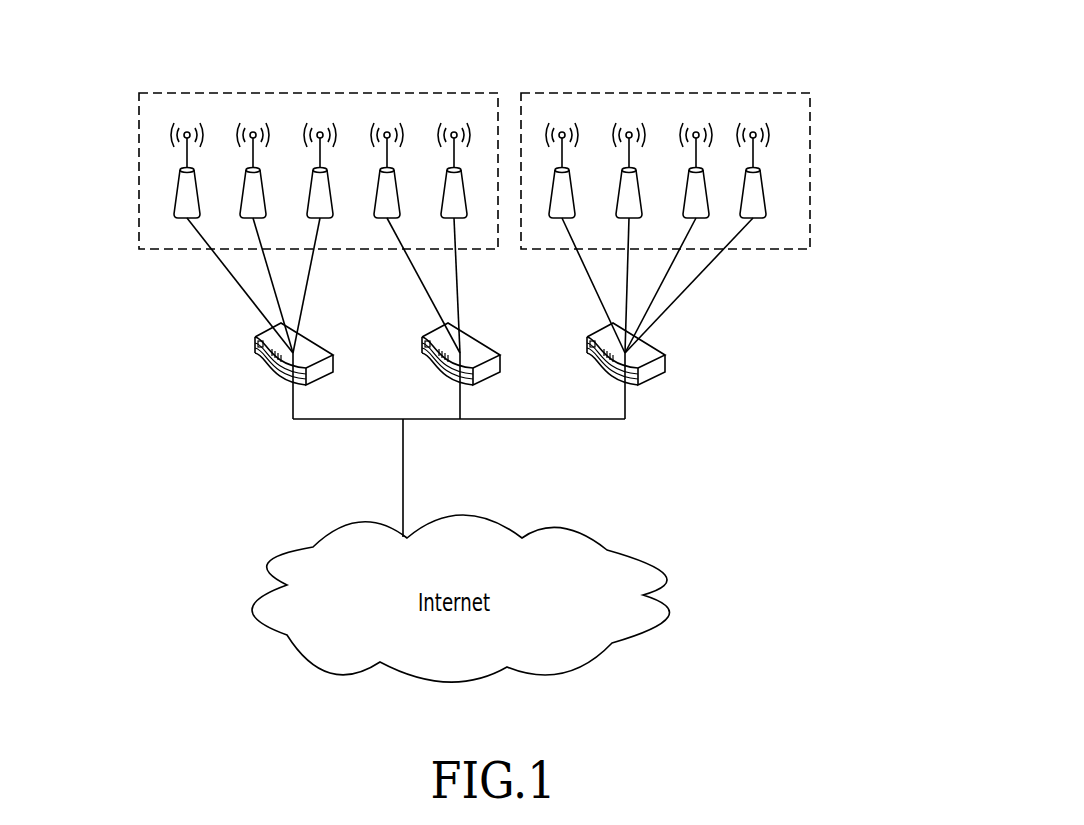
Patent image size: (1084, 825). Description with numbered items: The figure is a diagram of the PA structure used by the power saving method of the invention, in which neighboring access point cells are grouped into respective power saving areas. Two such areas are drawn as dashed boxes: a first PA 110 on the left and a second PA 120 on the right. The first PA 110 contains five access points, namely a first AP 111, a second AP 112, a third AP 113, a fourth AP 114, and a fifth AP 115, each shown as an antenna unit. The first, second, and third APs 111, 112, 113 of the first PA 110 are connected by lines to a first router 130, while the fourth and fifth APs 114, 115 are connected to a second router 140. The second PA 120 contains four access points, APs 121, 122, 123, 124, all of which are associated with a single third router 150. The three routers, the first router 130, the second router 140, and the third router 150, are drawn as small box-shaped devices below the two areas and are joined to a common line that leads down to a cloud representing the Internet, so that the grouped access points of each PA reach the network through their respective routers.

The first PA 110 is at (190, 252).
The first AP 111 is at (179, 186).
The second AP 112 is at (244, 188).
The third AP 113 is at (311, 188).
The fourth AP 114 is at (378, 188).
The fifth AP 115 is at (445, 188).
The second PA 120 is at (767, 252).
The AP 121 is at (571, 178).
The AP 122 is at (639, 178).
The AP 123 is at (706, 178).
The AP 124 is at (765, 196).
The first router 130 is at (255, 367).
The second router 140 is at (423, 360).
The third router 150 is at (657, 380).